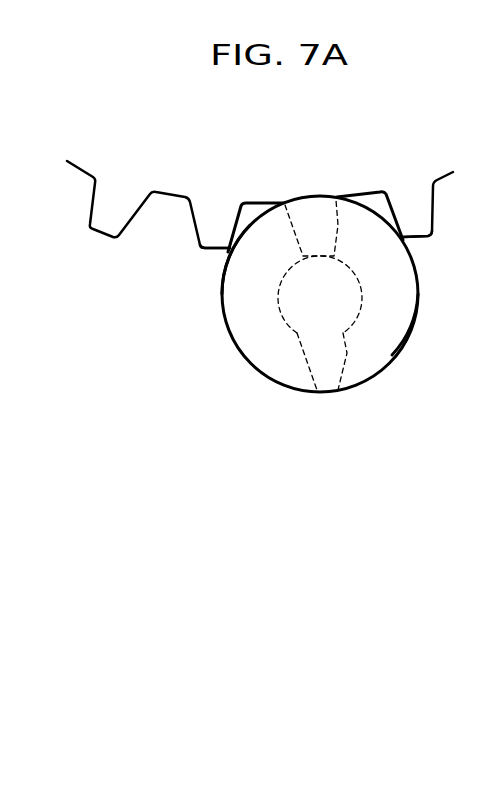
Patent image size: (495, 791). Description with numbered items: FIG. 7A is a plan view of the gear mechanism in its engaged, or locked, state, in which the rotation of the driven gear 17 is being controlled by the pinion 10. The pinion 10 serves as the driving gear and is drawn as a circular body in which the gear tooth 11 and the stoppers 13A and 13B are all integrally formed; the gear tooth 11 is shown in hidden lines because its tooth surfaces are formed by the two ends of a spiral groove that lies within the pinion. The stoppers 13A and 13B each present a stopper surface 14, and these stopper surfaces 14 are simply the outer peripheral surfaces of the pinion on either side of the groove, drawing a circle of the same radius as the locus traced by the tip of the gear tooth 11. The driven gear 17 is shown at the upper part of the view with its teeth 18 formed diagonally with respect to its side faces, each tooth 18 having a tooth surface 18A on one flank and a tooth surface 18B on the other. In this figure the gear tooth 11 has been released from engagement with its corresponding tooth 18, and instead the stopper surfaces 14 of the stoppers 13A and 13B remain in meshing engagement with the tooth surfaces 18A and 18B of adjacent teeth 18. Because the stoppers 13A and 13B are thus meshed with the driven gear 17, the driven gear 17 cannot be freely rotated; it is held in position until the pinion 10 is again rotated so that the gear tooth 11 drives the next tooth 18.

The pinion 10 is at (315, 404).
The gear tooth 11 is at (340, 360).
The stopper 13A is at (233, 288).
The stopper 13B is at (414, 315).
The stopper surface 14 is at (221, 278).
The driven gear 17 is at (99, 260).
The tooth 18 is at (321, 224).
The tooth surface 18A is at (258, 204).
The tooth surface 18B is at (368, 192).